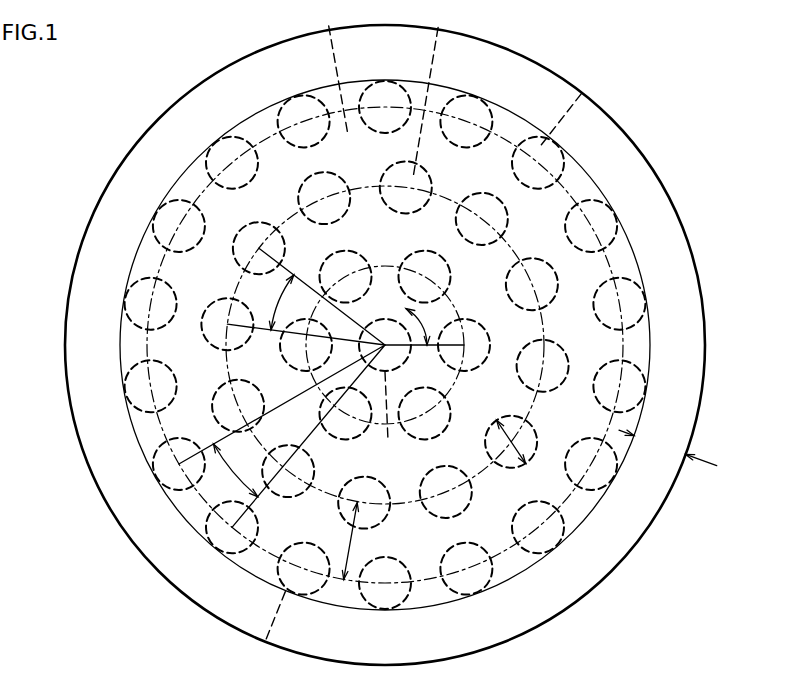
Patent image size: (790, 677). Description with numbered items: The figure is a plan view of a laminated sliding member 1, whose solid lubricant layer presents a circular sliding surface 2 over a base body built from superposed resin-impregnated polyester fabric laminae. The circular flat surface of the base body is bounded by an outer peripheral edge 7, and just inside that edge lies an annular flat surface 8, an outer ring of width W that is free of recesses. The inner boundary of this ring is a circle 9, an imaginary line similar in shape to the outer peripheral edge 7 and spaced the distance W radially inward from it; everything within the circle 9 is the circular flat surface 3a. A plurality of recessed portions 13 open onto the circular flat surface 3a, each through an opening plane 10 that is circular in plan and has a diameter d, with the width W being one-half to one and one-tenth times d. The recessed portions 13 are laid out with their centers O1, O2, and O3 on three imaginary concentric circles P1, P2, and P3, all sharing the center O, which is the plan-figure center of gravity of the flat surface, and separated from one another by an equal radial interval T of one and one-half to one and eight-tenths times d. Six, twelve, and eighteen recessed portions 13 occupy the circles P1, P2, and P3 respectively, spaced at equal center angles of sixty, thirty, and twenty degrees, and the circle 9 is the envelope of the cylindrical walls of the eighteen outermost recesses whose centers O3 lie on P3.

The laminated sliding member 1 is at (118, 147).
The sliding surface 2 is at (102, 447).
The circular flat surface 3a is at (329, 67).
The outer peripheral edge 7 is at (68, 387).
The annular flat surface 8 is at (236, 85).
The circle 9 is at (590, 173).
The opening plane 10 is at (464, 127).
The recessed portions 13 is at (414, 332).
The center O is at (388, 348).
The centers O1 is at (385, 345).
The centers O2 is at (532, 284).
The centers O3 is at (538, 163).
The imaginary concentric circle P1 is at (453, 391).
The imaginary concentric circle P2 is at (239, 282).
The imaginary concentric circle P3 is at (650, 345).
The diameter d is at (529, 435).
The equal interval T is at (347, 540).
The distance W is at (668, 450).